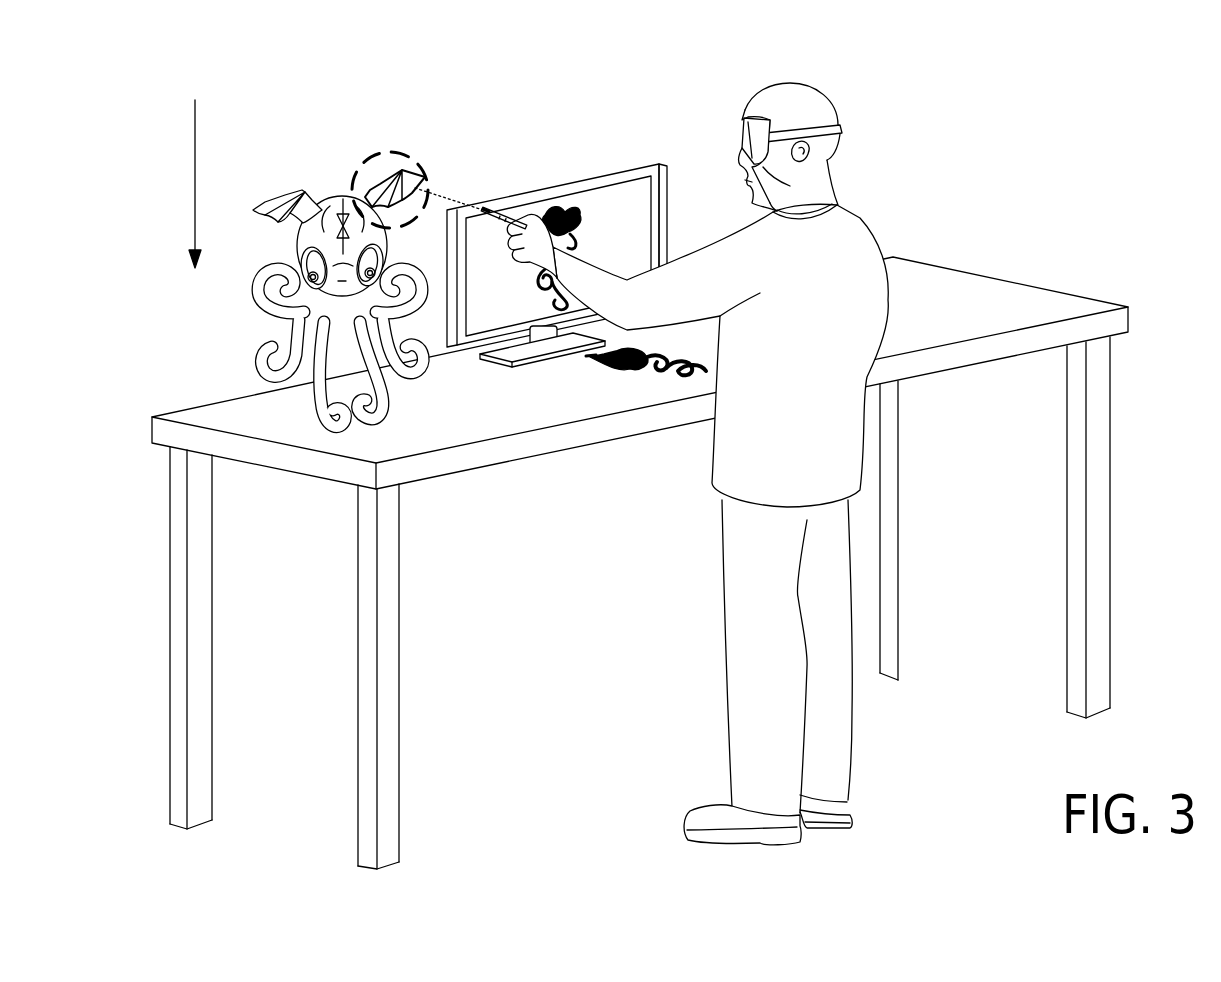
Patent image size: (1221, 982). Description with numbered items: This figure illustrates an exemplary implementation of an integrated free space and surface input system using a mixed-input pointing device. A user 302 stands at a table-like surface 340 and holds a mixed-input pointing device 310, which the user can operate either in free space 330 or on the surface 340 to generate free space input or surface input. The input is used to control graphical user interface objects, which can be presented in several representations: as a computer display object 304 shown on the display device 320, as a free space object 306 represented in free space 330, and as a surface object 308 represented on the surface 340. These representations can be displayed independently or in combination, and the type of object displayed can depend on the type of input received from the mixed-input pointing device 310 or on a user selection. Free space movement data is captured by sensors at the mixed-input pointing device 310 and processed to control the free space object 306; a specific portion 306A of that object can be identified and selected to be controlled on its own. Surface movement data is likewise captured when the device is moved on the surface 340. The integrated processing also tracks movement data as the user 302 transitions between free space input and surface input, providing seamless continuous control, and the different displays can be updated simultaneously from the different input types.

The user 302 is at (787, 93).
The computer display object 304 is at (538, 281).
The free space object 306 is at (297, 245).
The specific portion 306A is at (360, 160).
The surface object 308 is at (622, 373).
The mixed-input pointing device 310 is at (514, 215).
The display device 320 is at (602, 188).
The free space 330 is at (197, 169).
The surface 340 is at (622, 405).